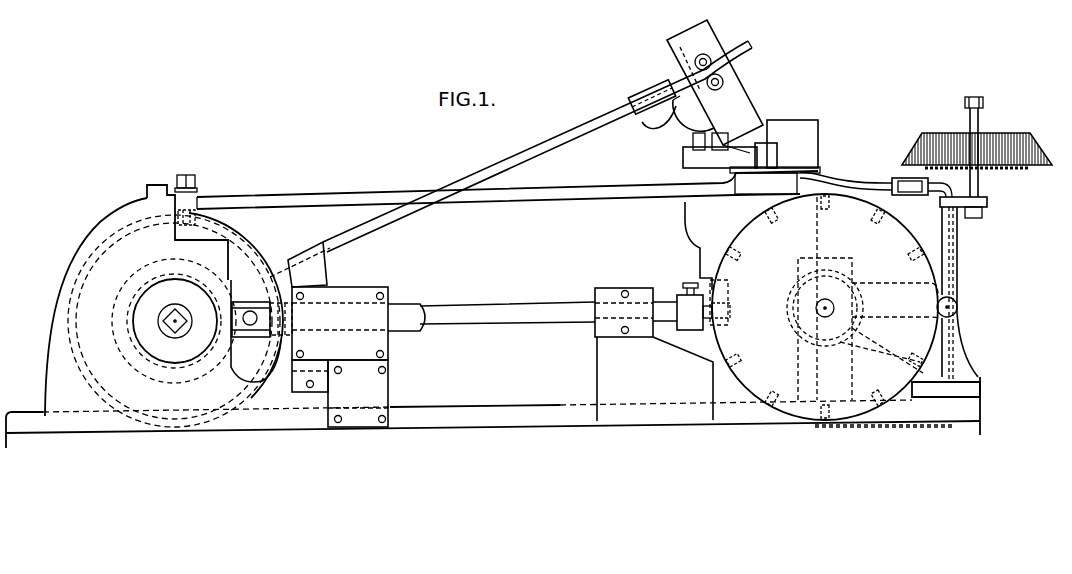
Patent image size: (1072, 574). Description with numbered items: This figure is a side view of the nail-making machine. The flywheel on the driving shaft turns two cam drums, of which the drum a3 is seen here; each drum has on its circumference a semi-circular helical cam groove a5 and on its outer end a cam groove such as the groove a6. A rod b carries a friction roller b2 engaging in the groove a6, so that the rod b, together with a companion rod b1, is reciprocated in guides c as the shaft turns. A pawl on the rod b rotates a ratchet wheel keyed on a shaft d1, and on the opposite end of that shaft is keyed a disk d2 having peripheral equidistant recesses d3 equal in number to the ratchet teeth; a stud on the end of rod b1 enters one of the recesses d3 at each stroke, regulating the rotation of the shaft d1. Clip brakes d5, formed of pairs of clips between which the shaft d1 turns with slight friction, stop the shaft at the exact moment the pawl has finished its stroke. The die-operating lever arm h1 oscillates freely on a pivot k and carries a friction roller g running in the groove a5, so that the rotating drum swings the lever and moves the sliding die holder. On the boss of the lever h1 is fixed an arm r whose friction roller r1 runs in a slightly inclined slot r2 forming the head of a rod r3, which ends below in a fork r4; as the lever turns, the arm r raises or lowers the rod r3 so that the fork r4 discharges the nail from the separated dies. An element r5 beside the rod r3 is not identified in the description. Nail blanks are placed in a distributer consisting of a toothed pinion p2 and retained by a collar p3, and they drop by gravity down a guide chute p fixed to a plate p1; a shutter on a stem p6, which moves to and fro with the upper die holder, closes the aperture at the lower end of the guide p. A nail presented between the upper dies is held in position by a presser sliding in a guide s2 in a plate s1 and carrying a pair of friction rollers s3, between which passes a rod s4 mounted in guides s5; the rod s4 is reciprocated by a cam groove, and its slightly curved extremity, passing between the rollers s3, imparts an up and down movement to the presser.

The cam drum a3 is at (215, 291).
The semi-circular helical cam groove a5 is at (173, 222).
The cam groove a6 is at (190, 375).
The friction roller g is at (192, 210).
The rod b is at (702, 328).
The rod b1 is at (528, 312).
The friction roller b2 is at (248, 328).
The guides c is at (647, 282).
The lever arm h1 is at (558, 192).
The plate s1 is at (668, 42).
The guide s2 is at (736, 127).
The friction rollers s3 is at (695, 64).
The rod s4 is at (524, 160).
The guides s5 is at (298, 247).
The pivot k is at (760, 153).
The arm r is at (832, 170).
The friction roller r1 is at (891, 180).
The slotted head r2 is at (920, 194).
The rod r3 is at (952, 422).
The fork r4 is at (834, 427).
The pivot r5 is at (948, 191).
The guide chute p is at (968, 128).
The plate p1 is at (968, 112).
The toothed pinion p2 is at (1033, 140).
The collar p3 is at (997, 134).
The stem p6 is at (1015, 168).
The shaft d1 is at (825, 298).
The disk d2 is at (824, 307).
The recesses d3 is at (875, 224).
The clip brakes d5 is at (858, 284).